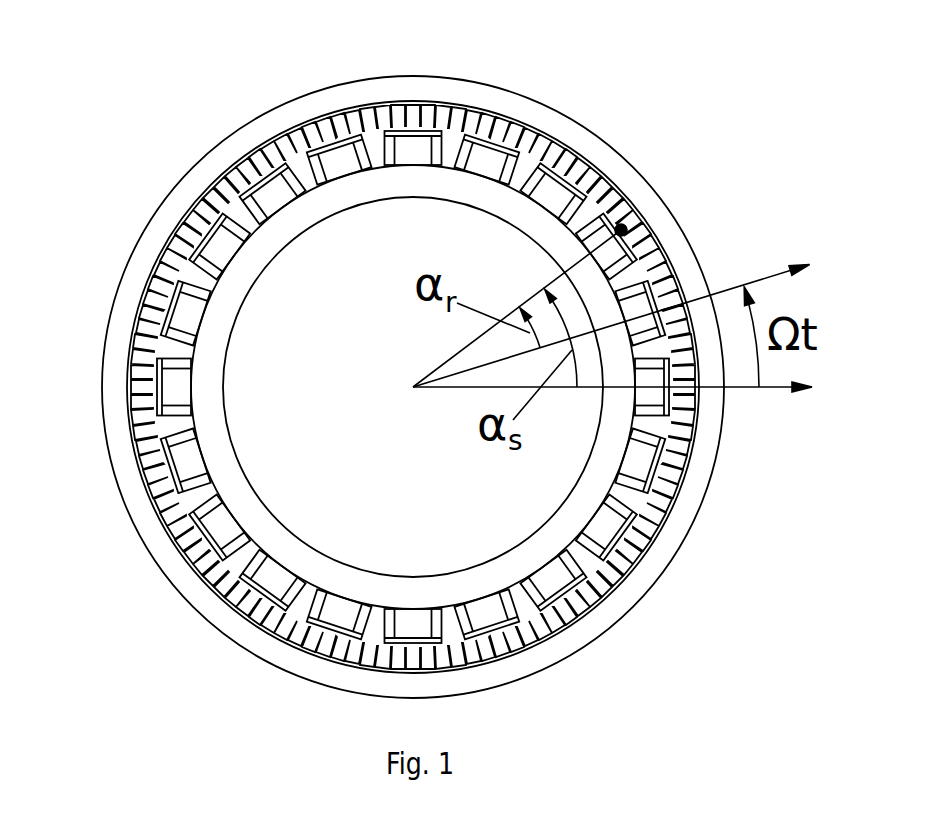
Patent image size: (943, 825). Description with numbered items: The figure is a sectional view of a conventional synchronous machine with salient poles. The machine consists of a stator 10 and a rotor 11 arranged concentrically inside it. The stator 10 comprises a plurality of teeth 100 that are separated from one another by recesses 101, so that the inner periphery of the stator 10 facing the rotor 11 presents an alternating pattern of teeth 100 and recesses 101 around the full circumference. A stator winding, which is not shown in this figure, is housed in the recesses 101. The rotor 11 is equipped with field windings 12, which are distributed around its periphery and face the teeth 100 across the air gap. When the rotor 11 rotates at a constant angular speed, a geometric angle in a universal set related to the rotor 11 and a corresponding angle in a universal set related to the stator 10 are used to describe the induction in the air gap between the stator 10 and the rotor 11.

The stator 10 is at (165, 222).
The teeth 100 is at (530, 135).
The recesses 101 is at (484, 118).
The rotor 11 is at (208, 383).
The field windings 12 is at (392, 148).